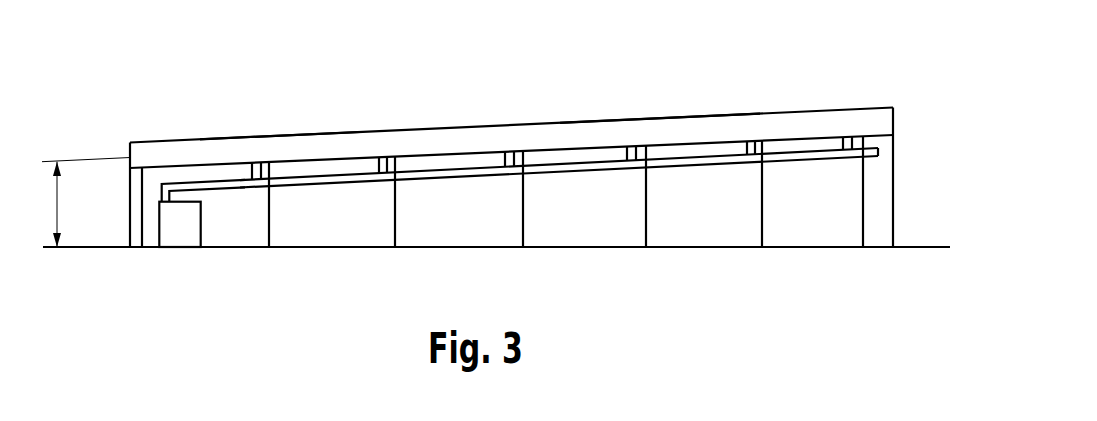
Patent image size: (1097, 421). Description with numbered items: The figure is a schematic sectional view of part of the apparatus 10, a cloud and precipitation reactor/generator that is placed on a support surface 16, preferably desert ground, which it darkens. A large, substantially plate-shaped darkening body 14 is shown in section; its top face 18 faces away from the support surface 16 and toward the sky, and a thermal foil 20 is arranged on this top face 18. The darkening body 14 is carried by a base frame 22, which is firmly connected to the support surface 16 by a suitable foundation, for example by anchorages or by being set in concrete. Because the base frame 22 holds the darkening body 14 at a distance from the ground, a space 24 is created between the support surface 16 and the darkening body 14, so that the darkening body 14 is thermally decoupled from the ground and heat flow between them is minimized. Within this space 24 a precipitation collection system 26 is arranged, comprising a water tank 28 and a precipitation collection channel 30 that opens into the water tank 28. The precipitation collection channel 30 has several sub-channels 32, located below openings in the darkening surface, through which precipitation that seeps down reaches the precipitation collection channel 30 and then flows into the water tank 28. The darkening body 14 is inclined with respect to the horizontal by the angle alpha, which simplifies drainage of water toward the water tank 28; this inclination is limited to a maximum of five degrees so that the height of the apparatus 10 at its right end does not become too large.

The apparatus 10 is at (502, 160).
The darkening body 14 is at (883, 122).
The support surface 16 is at (108, 247).
The top face 18 is at (652, 117).
The thermal foil 20 is at (283, 135).
The base frame 22 is at (895, 195).
The space 24 is at (593, 221).
The precipitation collection system 26 is at (228, 187).
The water tank 28 is at (178, 233).
The precipitation collection channel 30 is at (693, 168).
The sub-channel 32 is at (376, 158).
The angle alpha is at (86, 203).